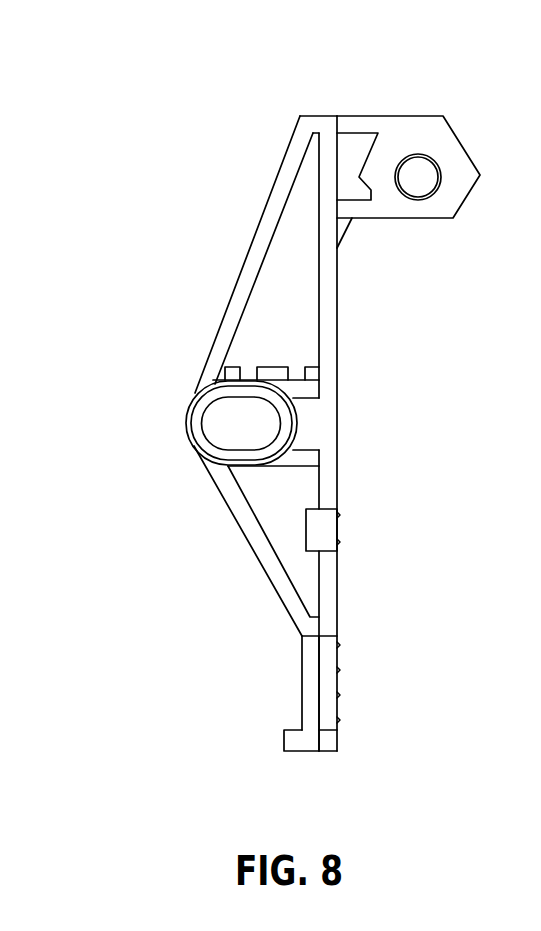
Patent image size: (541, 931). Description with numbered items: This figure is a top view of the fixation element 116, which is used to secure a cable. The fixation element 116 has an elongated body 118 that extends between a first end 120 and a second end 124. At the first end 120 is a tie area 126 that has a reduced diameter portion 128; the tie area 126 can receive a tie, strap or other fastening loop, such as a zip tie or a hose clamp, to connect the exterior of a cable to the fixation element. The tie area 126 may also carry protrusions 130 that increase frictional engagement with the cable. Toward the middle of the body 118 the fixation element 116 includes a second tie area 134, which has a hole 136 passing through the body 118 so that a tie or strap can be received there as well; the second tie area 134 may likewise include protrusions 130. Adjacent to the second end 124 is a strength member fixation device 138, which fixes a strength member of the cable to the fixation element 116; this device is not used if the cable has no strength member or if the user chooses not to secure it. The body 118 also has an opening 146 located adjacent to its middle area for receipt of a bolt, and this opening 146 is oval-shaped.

The fixation element 116 is at (239, 121).
The body 118 is at (248, 258).
The first end 120 is at (302, 689).
The second end 124 is at (320, 117).
The tie area 126 is at (328, 707).
The reduced diameter portion 128 is at (328, 683).
The protrusions 130 is at (337, 542).
The second tie area 134 is at (328, 529).
The hole 136 is at (307, 523).
The strength member fixation device 138 is at (457, 138).
The opening 146 is at (207, 412).